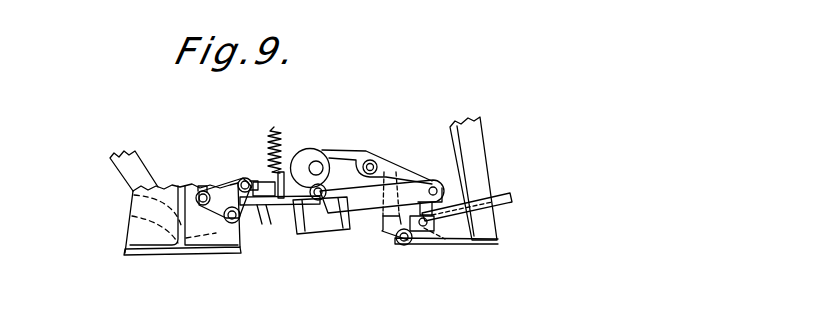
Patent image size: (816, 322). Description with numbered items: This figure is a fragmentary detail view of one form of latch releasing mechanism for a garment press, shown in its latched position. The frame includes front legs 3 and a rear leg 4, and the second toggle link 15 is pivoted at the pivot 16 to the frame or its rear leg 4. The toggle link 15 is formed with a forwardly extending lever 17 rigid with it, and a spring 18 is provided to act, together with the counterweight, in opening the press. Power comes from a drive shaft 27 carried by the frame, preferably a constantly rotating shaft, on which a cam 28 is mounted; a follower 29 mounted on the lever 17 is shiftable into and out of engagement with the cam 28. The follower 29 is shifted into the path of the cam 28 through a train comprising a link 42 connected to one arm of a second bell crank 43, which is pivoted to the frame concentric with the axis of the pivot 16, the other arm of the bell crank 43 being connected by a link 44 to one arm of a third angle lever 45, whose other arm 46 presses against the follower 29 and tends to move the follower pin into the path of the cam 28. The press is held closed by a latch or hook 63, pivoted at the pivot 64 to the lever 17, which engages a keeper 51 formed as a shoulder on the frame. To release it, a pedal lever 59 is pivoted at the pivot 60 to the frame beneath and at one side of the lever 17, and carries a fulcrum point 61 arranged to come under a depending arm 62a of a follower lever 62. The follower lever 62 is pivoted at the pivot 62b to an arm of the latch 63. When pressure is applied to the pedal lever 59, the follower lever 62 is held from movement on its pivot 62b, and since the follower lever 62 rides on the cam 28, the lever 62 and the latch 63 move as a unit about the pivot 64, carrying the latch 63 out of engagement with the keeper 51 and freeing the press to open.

The front leg 3 is at (473, 132).
The rear leg 4 is at (135, 223).
The second toggle link 15 is at (130, 172).
The pivot 16 is at (231, 223).
The lever 17 is at (408, 188).
The spring 18 is at (267, 137).
The drive shaft 27 is at (315, 163).
The cam 28 is at (302, 152).
The follower 29 is at (323, 218).
The link 42 is at (202, 187).
The second bell crank 43 is at (212, 222).
The link 44 is at (251, 181).
The third angle lever 45 is at (267, 203).
The arm 46 is at (287, 204).
The keeper 51 is at (420, 227).
The pedal lever 59 is at (420, 219).
The pivot 60 is at (404, 241).
The fulcrum point 61 is at (368, 231).
The follower lever 62 is at (348, 149).
The depending arm 62a is at (383, 215).
The pivot 62b is at (373, 165).
The latch 63 is at (396, 167).
The pivot 64 is at (441, 185).